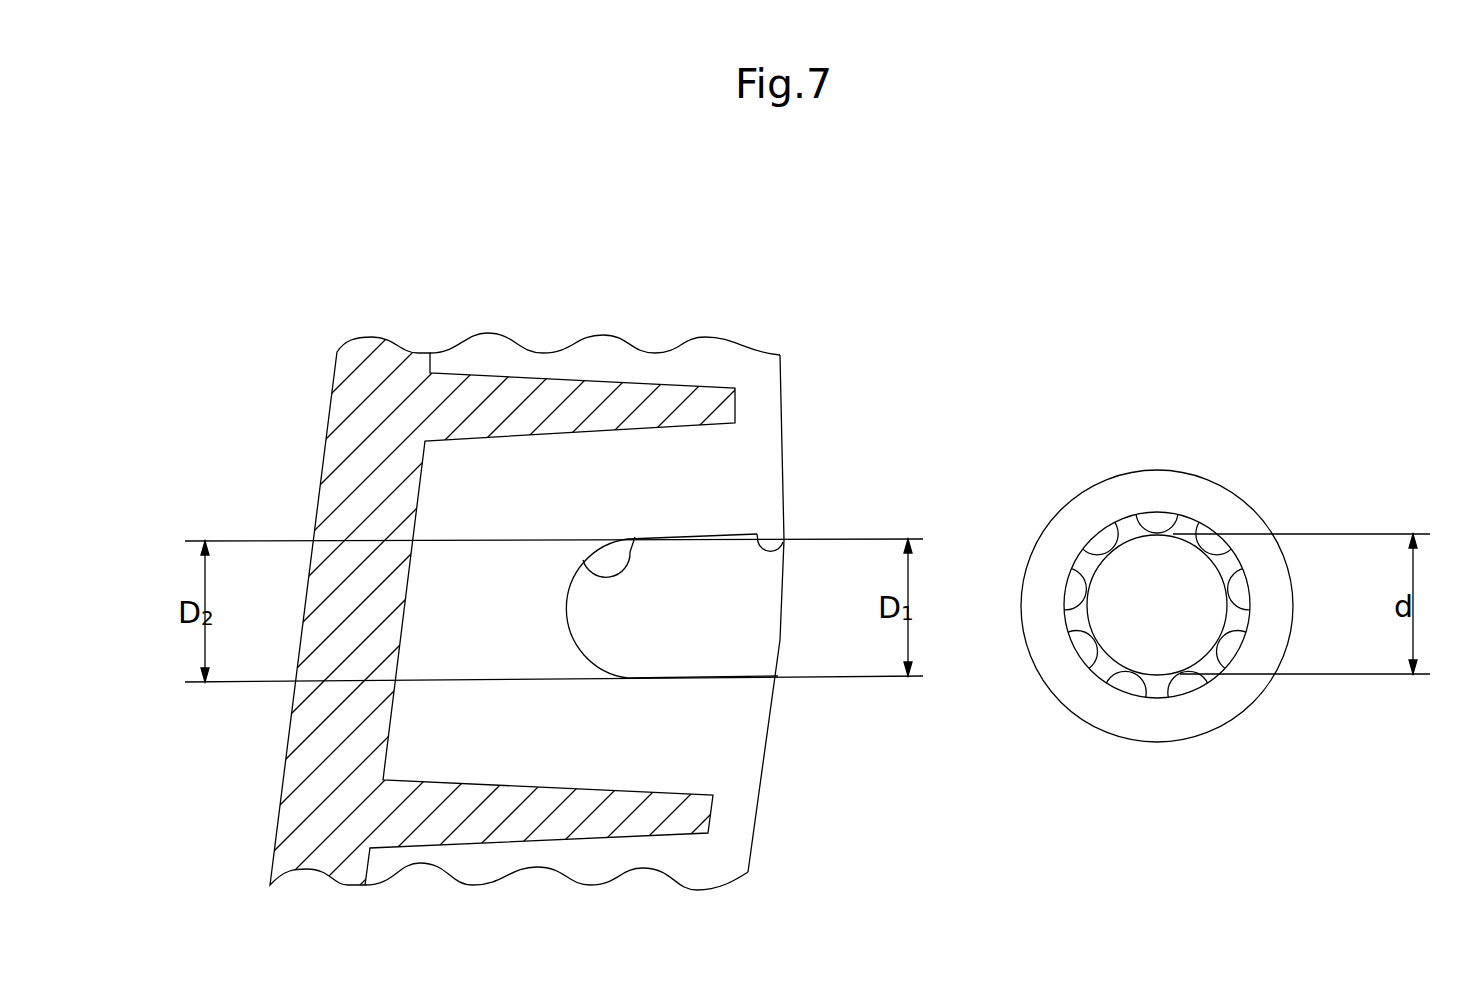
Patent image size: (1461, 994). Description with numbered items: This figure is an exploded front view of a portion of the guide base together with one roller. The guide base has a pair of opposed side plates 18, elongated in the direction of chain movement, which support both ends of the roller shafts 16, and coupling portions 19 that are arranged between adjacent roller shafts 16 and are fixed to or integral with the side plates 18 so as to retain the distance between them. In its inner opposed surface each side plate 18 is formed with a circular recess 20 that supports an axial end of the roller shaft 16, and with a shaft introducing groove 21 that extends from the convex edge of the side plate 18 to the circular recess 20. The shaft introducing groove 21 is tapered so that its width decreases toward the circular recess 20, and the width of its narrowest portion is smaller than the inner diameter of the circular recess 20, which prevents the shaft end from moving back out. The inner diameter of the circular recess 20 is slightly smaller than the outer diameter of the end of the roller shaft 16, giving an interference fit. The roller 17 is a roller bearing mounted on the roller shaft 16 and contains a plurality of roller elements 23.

The roller shaft 16 is at (1142, 553).
The roller 17 is at (1188, 485).
The side plate 18 is at (750, 730).
The coupling portion 19 is at (700, 813).
The circular recess 20 is at (635, 537).
The shaft introducing groove 21 is at (787, 555).
The roller element 23 is at (1128, 687).